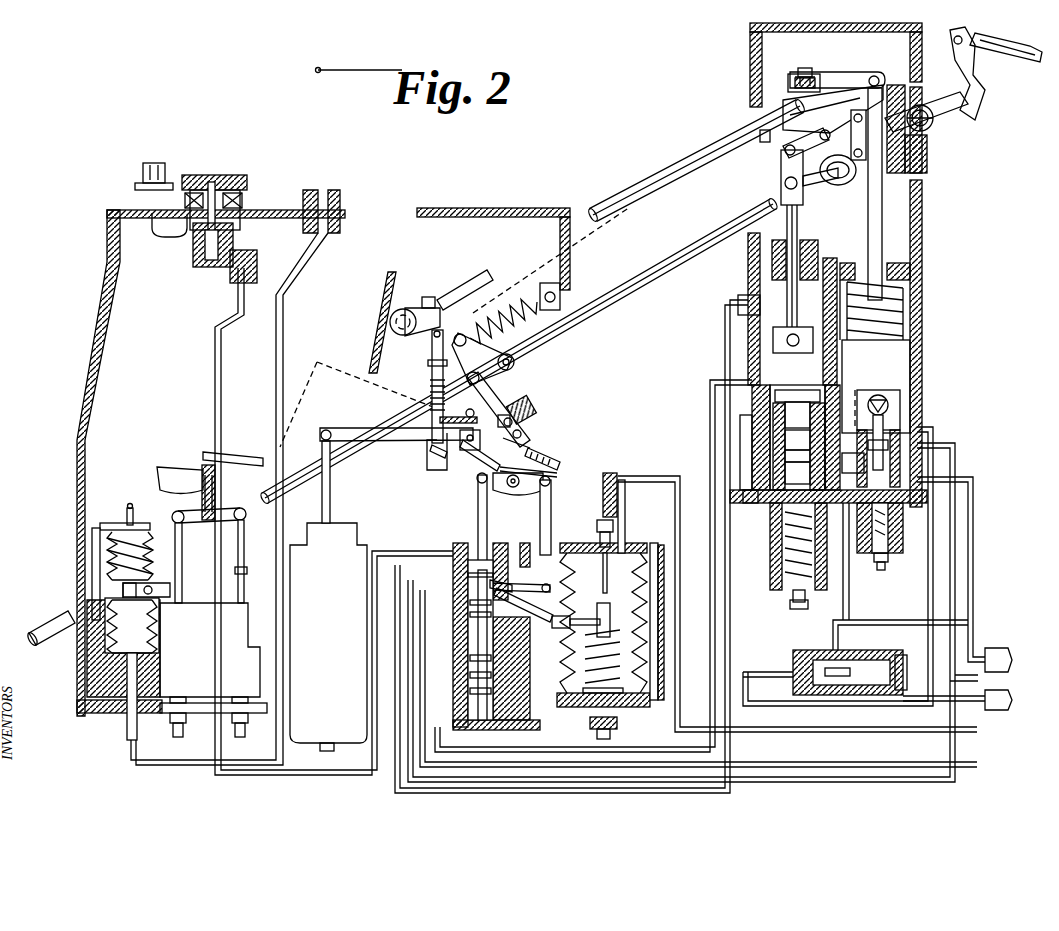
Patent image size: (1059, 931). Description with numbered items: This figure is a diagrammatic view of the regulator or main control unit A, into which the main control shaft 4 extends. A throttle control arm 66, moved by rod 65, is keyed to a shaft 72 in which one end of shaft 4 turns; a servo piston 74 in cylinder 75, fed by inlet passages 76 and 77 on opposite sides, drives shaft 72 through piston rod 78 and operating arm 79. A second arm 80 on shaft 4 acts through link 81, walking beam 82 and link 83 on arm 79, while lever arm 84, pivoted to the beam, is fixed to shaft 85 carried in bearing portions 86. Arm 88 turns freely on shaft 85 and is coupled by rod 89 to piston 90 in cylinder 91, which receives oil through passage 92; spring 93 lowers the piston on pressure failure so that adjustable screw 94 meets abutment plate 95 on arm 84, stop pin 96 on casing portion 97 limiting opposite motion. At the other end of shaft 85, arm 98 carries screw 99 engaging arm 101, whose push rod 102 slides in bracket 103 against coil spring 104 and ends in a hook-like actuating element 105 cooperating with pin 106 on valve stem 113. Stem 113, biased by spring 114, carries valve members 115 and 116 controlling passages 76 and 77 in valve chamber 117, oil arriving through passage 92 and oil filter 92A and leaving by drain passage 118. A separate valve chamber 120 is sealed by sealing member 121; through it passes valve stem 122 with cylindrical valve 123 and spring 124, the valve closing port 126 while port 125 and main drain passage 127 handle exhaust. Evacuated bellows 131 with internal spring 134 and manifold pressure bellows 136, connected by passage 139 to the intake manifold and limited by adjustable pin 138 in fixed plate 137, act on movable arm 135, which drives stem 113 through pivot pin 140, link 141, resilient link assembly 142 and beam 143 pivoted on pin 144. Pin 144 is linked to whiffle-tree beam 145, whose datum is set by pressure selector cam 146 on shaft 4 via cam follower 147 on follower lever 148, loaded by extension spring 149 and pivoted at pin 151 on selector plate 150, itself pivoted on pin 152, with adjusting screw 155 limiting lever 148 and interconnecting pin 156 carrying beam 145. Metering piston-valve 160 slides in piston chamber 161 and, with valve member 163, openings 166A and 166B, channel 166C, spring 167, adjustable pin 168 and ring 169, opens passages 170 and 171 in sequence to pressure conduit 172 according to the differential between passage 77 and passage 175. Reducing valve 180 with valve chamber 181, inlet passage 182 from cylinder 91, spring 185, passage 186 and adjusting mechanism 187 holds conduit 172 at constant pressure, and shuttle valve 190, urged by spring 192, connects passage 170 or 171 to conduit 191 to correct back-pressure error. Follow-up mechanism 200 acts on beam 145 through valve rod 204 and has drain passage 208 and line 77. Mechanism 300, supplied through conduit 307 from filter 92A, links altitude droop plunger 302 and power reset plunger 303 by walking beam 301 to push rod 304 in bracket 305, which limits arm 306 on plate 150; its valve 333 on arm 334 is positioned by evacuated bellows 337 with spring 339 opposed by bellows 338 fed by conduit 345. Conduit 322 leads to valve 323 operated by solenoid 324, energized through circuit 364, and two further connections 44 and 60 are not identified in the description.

The main control unit A is at (80, 350).
The main control shaft 4 is at (52, 610).
The fitting 44 is at (1013, 655).
The fitting 60 is at (1013, 700).
The rod 65 is at (1005, 55).
The throttle control arm 66 is at (972, 80).
The shaft 72 is at (950, 115).
The servo piston 74 is at (768, 352).
The cylinder 75 is at (765, 315).
The fluid pressure inlet passage 76 is at (395, 600).
The fluid pressure inlet passage 77 is at (385, 550).
The piston rod 78 is at (800, 238).
The operating arm 79 is at (808, 190).
The second arm 80 is at (858, 172).
The link 81 is at (868, 118).
The walking beam 82 is at (785, 153).
The link 83 is at (781, 180).
The lever arm 84 is at (805, 118).
The shaft 85 is at (672, 165).
The bearing portions 86 is at (403, 336).
The arm 88 is at (835, 72).
The rod 89 is at (882, 210).
The piston 90 is at (895, 340).
The cylinder 91 is at (910, 355).
The passage 92 is at (408, 582).
The oil filter 92A is at (418, 630).
The spring 93 is at (910, 290).
The adjustable screw 94 is at (807, 68).
The abutment plate 95 is at (795, 97).
The stop pin 96 is at (760, 140).
The casing portion 97 is at (760, 118).
The arm 98 is at (420, 303).
The adjustable screw 99 is at (430, 297).
The arm 101 is at (440, 330).
The push rod 102 is at (428, 373).
The bracket 103 is at (410, 412).
The coil spring 104 is at (430, 390).
The hook-like actuating element 105 is at (427, 470).
The pin 106 is at (442, 472).
The valve stem 113 is at (480, 545).
The spring 114 is at (470, 628).
The valve member 115 is at (468, 575).
The valve member 116 is at (470, 603).
The valve chamber 117 is at (500, 580).
The drain passage 118 is at (515, 645).
The valve chamber 120 is at (492, 691).
The sealing member 121 is at (492, 675).
The valve stem 122 is at (492, 658).
The cylindrical valve 123 is at (500, 712).
The spring 124 is at (495, 730).
The port 125 is at (518, 545).
The port 126 is at (510, 722).
The main drain passage 127 is at (460, 728).
The evacuated bellows 131 is at (645, 662).
The spring 134 is at (620, 650).
The movable arm 135 is at (612, 620).
The second bellows 136 is at (575, 555).
The fixed plate 137 is at (652, 545).
The adjustable pin 138 is at (607, 565).
The passage 139 is at (660, 476).
The pivot pin 140 is at (545, 612).
The link 141 is at (525, 595).
The resilient link assembly 142 is at (552, 500).
The beam 143 is at (503, 492).
The pin 144 is at (477, 498).
The whiffle-tree beam 145 is at (408, 440).
The pressure selector cam 146 is at (516, 366).
The cam follower 147 is at (478, 365).
The follower lever 148 is at (508, 405).
The extension spring 149 is at (508, 312).
The selector plate 150 is at (522, 437).
The pin 151 is at (514, 423).
The pin 152 is at (558, 464).
The adjusting screw 155 is at (533, 408).
The interconnecting pin 156 is at (478, 445).
The metering piston-valve 160 is at (795, 390).
The piston chamber 161 is at (797, 422).
The valve member 163 is at (797, 415).
The opening 166A is at (773, 405).
The opening 166B is at (796, 455).
The channel 166C is at (708, 460).
The spring 167 is at (770, 575).
The adjustable pin 168 is at (805, 444).
The ring 169 is at (805, 392).
The passage 170 is at (740, 420).
The passage 171 is at (1000, 622).
The pressure conduit 172 is at (934, 428).
The passage 175 is at (748, 505).
The reducing valve 180 is at (900, 395).
The valve chamber 181 is at (888, 445).
The pressure inlet passage 182 is at (857, 401).
The spring 185 is at (928, 497).
The passage 186 is at (898, 410).
The adjusting mechanism 187 is at (893, 555).
The shuttle valve 190 is at (840, 680).
The conduit 191 is at (852, 603).
The spring 192 is at (805, 655).
The follow-up mechanism 200 is at (310, 658).
The valve rod 204 is at (320, 504).
The drain passage 208 is at (292, 580).
The mechanism 300 is at (193, 657).
The walking beam 301 is at (182, 548).
The altitude droop plunger 302 is at (172, 522).
The power reset plunger 303 is at (244, 535).
The push rod 304 is at (200, 470).
The bracket 305 is at (160, 468).
The arm 306 is at (240, 455).
The conduit 307 is at (238, 773).
The conduit 322 is at (222, 362).
The valve 323 is at (200, 235).
The solenoid 324 is at (247, 195).
The valve 333 is at (185, 592).
The arm 334 is at (152, 590).
The bellows 337 is at (100, 526).
The bellows 338 is at (118, 634).
The spring 339 is at (107, 554).
The conduit 345 is at (284, 303).
The circuit 364 is at (150, 232).